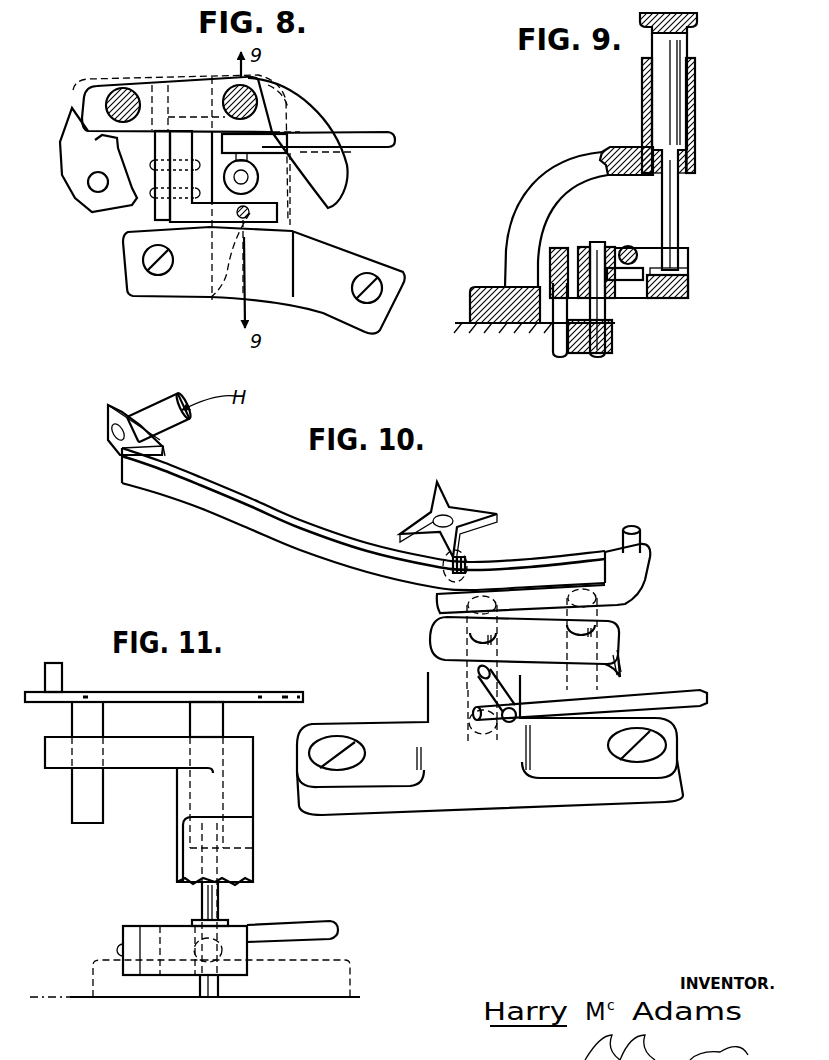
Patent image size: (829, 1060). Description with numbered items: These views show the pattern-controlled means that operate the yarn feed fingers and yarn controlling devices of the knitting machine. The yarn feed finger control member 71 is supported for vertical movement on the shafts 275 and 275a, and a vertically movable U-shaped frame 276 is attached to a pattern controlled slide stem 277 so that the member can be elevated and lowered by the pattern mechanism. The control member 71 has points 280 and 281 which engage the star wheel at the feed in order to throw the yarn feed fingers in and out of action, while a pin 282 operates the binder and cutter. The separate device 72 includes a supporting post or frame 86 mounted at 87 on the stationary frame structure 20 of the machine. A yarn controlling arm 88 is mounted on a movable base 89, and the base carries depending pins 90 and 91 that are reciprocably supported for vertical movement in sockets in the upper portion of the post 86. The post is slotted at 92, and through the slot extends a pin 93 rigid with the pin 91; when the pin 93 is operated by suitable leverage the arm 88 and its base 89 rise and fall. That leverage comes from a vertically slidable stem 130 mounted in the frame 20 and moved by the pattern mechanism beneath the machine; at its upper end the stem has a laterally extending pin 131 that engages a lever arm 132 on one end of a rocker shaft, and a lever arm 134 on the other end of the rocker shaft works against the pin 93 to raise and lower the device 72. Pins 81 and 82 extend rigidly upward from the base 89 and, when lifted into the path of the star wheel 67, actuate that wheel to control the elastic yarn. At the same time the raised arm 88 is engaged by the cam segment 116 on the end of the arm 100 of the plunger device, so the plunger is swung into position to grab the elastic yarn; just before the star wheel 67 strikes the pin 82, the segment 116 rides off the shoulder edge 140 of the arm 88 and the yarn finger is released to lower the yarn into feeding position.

In FIG. 9, the stationary frame structure 20 is at (614, 345).
In FIG. 10, the star wheel 67 is at (462, 492).
In FIG. 8, the pattern controlled member 71 is at (295, 103).
In FIG. 11, the pattern controlled member 71 is at (252, 690).
In FIG. 10, the device 72 is at (302, 556).
In FIG. 10, the pin 81 is at (468, 562).
In FIG. 10, the pin 82 is at (642, 530).
In FIG. 10, the supporting post or frame 86 is at (430, 694).
In FIG. 10, the mounting 87 is at (340, 762).
In FIG. 10, the yarn controlling arm 88 is at (388, 574).
In FIG. 10, the movable base 89 is at (588, 549).
In FIG. 10, the depending pin 90 is at (612, 626).
In FIG. 10, the depending pin 91 is at (496, 636).
In FIG. 10, the slot 92 is at (490, 740).
In FIG. 10, the pin 93 is at (511, 682).
In FIG. 10, the arm 100 is at (180, 422).
In FIG. 10, the cam segment 116 is at (108, 422).
In FIG. 8, the vertically slidable stem 130 is at (250, 180).
In FIG. 9, the vertically slidable stem 130 is at (597, 360).
In FIG. 8, the laterally extending pin 131 is at (250, 154).
In FIG. 9, the laterally extending pin 131 is at (630, 283).
In FIG. 8, the lever arm 132 is at (378, 133).
In FIG. 9, the lever arm 132 is at (632, 246).
In FIG. 11, the lever arm 132 is at (318, 922).
In FIG. 10, the lever arm 134 is at (700, 690).
In FIG. 10, the shoulder edge 140 is at (497, 530).
In FIG. 9, the shaft 275 is at (688, 55).
In FIG. 11, the shaft 275 is at (222, 720).
In FIG. 11, the shaft 275a is at (72, 810).
In FIG. 8, the U-shaped frame 276 is at (170, 140).
In FIG. 9, the U-shaped frame 276 is at (690, 292).
In FIG. 11, the U-shaped frame 276 is at (237, 978).
In FIG. 8, the pattern controlled slide stem 277 is at (223, 300).
In FIG. 9, the pattern controlled slide stem 277 is at (560, 353).
In FIG. 8, the point 280 is at (330, 207).
In FIG. 8, the point 281 is at (134, 212).
In FIG. 11, the pin 282 is at (62, 663).